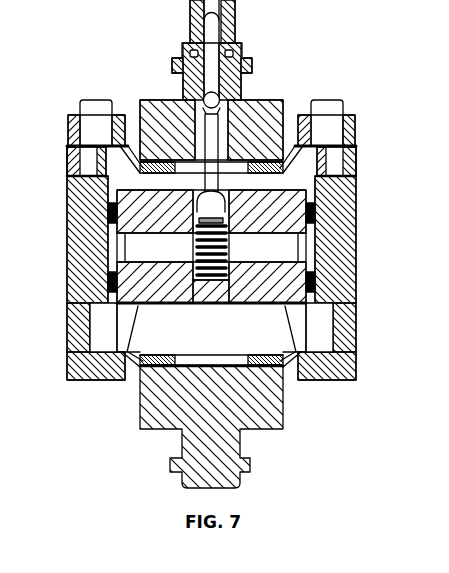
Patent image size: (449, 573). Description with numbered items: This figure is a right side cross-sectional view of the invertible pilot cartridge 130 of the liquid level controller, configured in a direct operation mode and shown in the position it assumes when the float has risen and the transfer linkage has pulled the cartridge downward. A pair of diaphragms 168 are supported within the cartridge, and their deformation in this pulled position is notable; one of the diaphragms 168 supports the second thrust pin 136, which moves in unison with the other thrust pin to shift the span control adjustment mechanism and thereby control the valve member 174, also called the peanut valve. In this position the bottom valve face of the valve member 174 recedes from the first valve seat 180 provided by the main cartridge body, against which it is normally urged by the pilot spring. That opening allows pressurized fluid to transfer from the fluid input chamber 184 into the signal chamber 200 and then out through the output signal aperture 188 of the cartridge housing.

The invertible pilot cartridge 130 is at (238, 254).
The valve member 174 is at (140, 100).
The diaphragms 168 is at (292, 146).
The first valve seat 180 is at (330, 176).
The fluid input chamber 184 is at (292, 247).
The output signal aperture 188 is at (358, 330).
The signal chamber 200 is at (160, 190).
The second thrust pin 136 is at (200, 403).